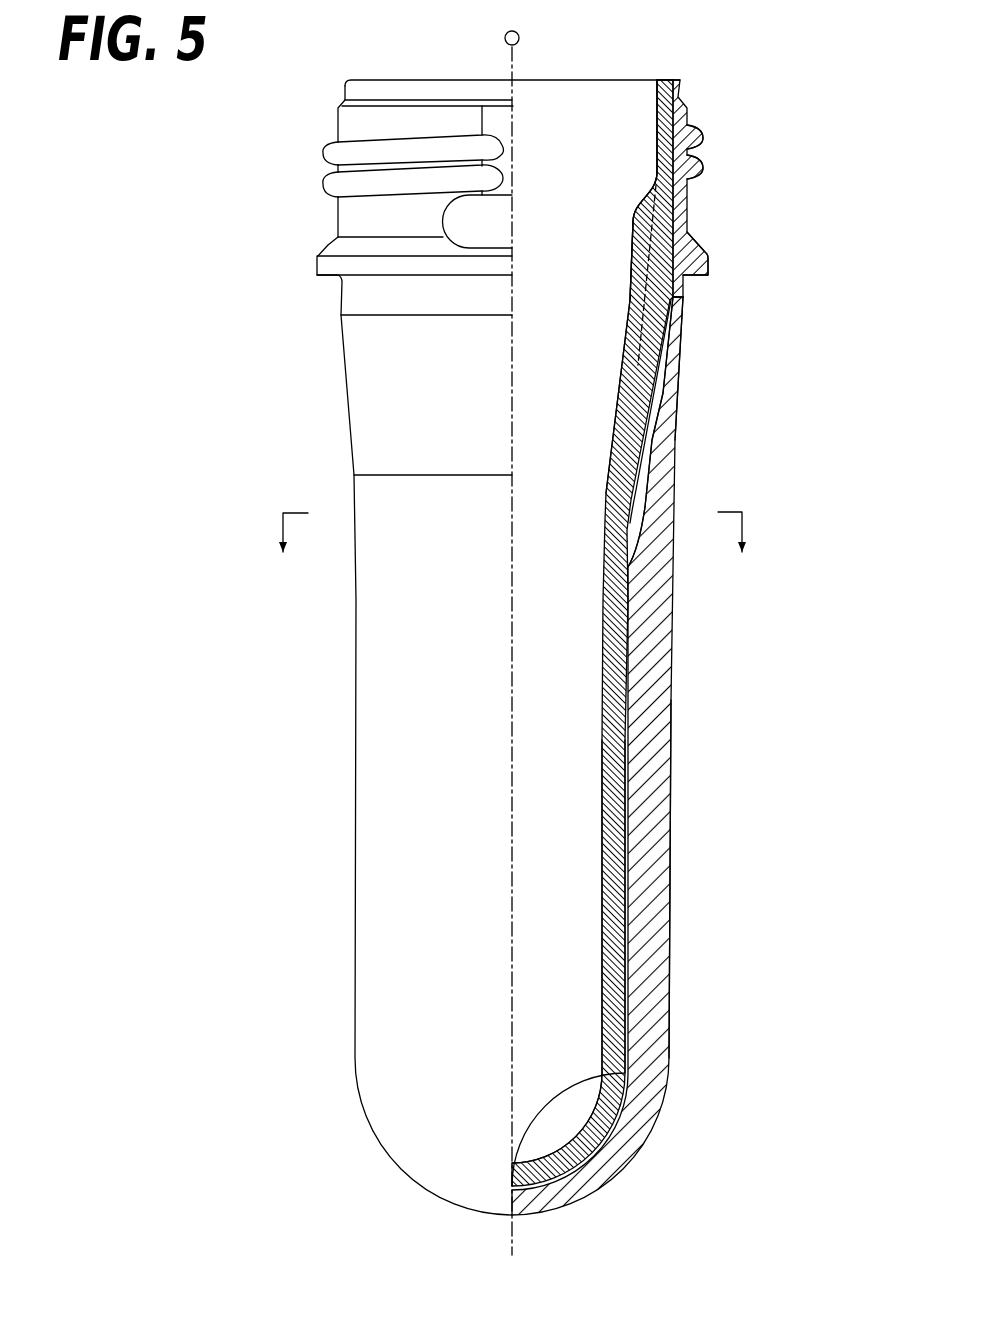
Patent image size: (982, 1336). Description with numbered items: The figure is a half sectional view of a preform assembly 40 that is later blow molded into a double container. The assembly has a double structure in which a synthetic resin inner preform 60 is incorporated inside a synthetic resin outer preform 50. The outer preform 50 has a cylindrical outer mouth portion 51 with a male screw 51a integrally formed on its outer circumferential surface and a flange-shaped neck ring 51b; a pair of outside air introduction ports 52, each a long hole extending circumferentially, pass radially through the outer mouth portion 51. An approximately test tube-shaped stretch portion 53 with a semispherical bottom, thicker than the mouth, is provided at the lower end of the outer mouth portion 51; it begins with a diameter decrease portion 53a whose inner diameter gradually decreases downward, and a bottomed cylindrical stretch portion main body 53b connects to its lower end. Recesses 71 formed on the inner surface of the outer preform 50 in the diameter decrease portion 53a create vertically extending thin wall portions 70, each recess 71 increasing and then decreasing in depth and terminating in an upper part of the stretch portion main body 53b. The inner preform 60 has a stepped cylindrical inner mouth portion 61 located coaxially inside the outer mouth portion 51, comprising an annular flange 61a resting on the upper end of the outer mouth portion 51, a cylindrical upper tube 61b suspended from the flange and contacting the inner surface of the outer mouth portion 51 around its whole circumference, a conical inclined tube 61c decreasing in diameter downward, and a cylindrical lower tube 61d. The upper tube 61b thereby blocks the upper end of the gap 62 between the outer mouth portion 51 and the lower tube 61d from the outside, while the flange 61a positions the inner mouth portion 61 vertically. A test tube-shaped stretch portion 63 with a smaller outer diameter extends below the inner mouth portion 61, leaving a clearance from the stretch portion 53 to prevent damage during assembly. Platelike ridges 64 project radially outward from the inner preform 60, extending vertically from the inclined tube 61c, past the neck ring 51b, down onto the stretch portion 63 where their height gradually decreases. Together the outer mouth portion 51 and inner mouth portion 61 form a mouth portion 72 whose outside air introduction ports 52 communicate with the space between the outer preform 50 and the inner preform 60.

The preform assembly 40 is at (561, 638).
The outer preform 50 is at (653, 647).
The outer mouth portion 51 is at (733, 188).
The male screw 51a is at (690, 138).
The neck ring 51b is at (706, 268).
The outside air introduction port 52 is at (442, 213).
The stretch portion 53 is at (635, 756).
The diameter decrease portion 53a is at (666, 400).
The stretch portion main body 53b is at (654, 845).
The inner preform 60 is at (625, 606).
The inner mouth portion 61 is at (644, 259).
The annular flange 61a is at (675, 80).
The upper tube 61b is at (665, 133).
The inclined tube 61c is at (650, 186).
The lower tube 61d is at (642, 279).
The gap 62 is at (675, 298).
The stretch portion 63 is at (612, 718).
The ridge 64 is at (657, 249).
The thin wall portion 70 is at (663, 453).
The recess 71 is at (648, 470).
The mouth portion 72 is at (706, 155).